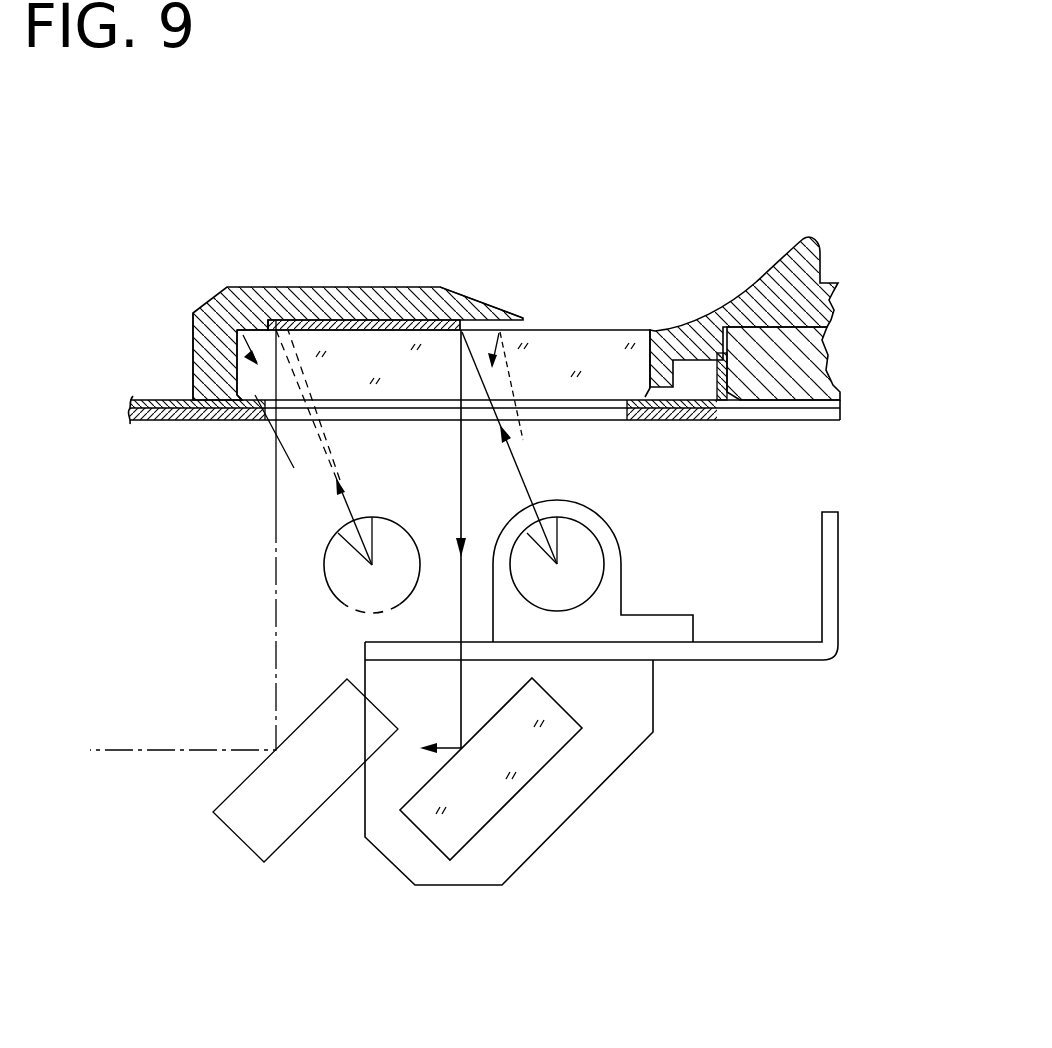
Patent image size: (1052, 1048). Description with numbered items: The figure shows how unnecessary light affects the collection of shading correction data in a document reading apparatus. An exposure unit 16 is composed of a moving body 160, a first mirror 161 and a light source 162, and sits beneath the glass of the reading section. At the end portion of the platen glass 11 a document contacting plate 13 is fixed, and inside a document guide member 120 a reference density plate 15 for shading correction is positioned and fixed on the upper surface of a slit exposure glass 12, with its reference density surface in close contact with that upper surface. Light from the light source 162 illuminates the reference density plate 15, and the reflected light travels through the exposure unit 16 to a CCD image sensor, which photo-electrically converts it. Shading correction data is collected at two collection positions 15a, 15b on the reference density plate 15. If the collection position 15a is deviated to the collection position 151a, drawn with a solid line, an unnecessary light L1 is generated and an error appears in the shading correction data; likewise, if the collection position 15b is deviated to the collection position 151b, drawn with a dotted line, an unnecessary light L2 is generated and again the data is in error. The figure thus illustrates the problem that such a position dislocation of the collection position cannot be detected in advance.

The platen glass 11 is at (830, 362).
The slit exposure glass 12 is at (596, 360).
The document contacting plate 13 is at (812, 258).
The reference density plate 15 is at (370, 318).
The collection position 15a is at (423, 313).
The collection position 15b is at (308, 322).
The exposure unit 16 is at (672, 800).
The document guide member 120 is at (205, 348).
The collection position 151a is at (462, 320).
The collection position 151b is at (273, 323).
The moving body 160 is at (806, 662).
The first mirror 161 is at (515, 797).
The light source 162 is at (580, 533).
The unnecessary light L1 is at (523, 432).
The unnecessary light L2 is at (300, 426).